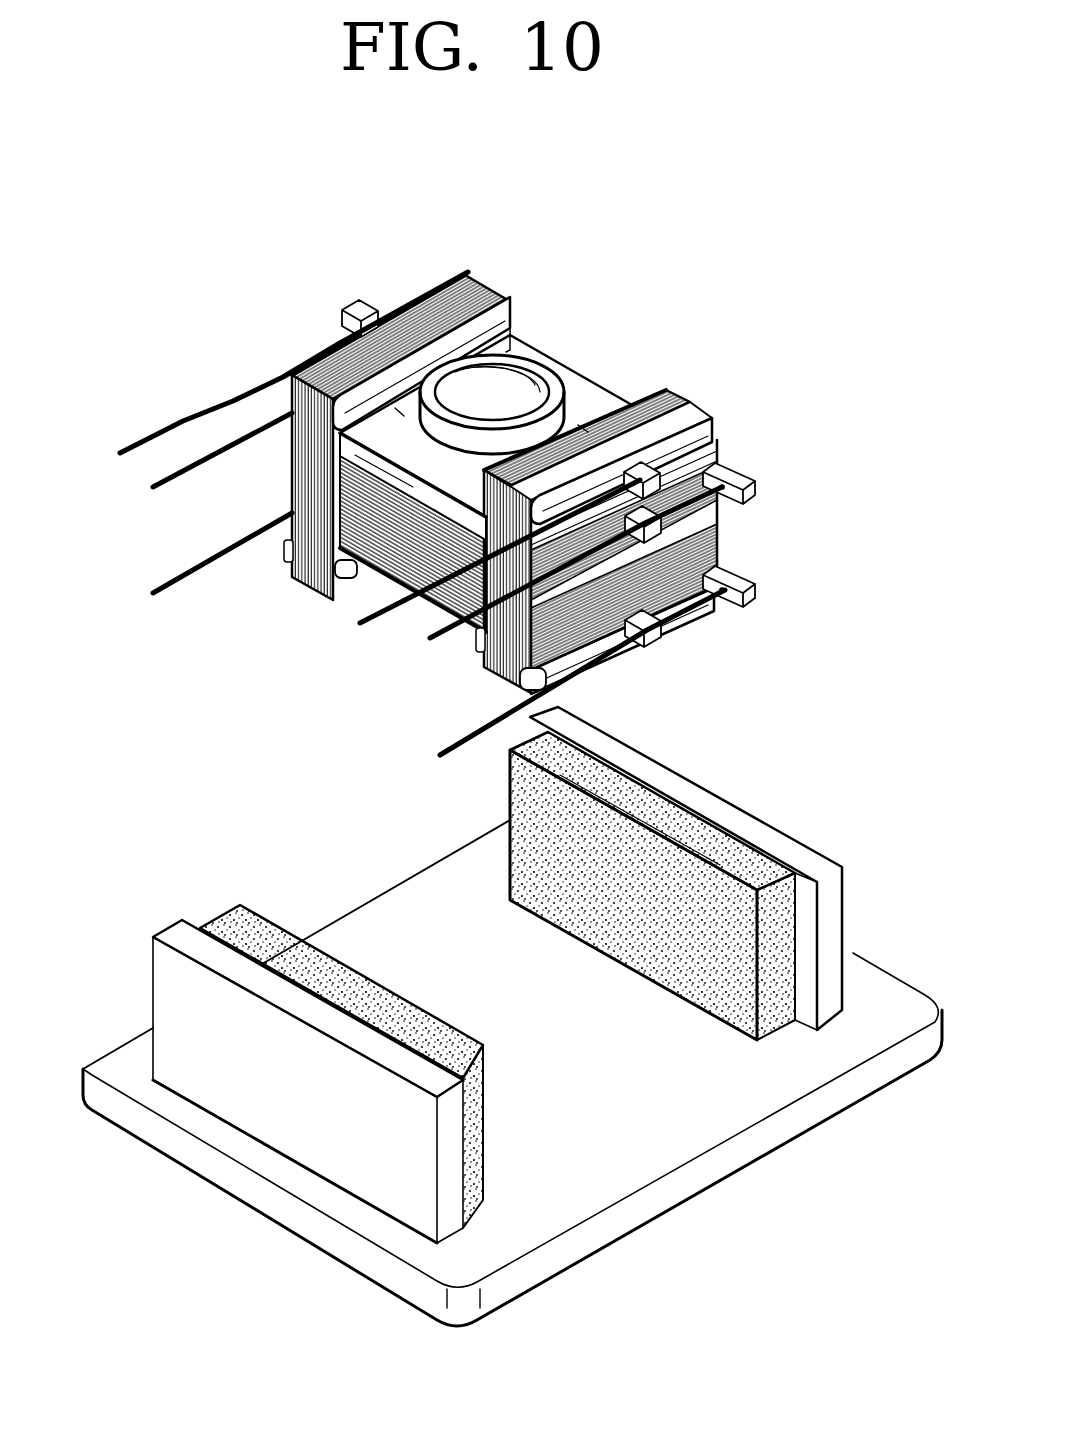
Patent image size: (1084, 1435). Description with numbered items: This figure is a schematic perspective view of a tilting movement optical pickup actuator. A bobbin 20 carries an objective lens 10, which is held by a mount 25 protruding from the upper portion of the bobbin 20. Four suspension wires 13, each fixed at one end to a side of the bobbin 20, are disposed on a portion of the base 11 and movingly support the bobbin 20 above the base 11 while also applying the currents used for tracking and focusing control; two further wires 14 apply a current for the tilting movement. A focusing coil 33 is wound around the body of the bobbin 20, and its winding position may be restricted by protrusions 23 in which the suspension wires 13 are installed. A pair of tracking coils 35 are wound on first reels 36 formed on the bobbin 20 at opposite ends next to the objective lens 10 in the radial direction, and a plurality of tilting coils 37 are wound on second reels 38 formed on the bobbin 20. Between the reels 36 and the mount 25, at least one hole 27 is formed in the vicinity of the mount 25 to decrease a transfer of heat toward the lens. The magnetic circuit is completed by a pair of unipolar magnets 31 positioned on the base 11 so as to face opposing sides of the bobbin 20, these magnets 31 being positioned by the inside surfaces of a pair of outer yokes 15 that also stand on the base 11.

The objective lens 10 is at (516, 345).
The base 11 is at (648, 1208).
The suspension wires 13 is at (167, 582).
The wires 14 is at (186, 423).
The outer yokes 15 is at (178, 936).
The bobbin 20 is at (578, 385).
The protrusions 23 is at (668, 640).
The mount 25 is at (528, 380).
The holes 27 is at (400, 412).
The unipolar magnets 31 is at (241, 912).
The focusing coil 33 is at (375, 545).
The tracking coils 35 is at (396, 332).
The first reels 36 is at (470, 322).
The tilting coils 37 is at (503, 300).
The second reels 38 is at (340, 570).